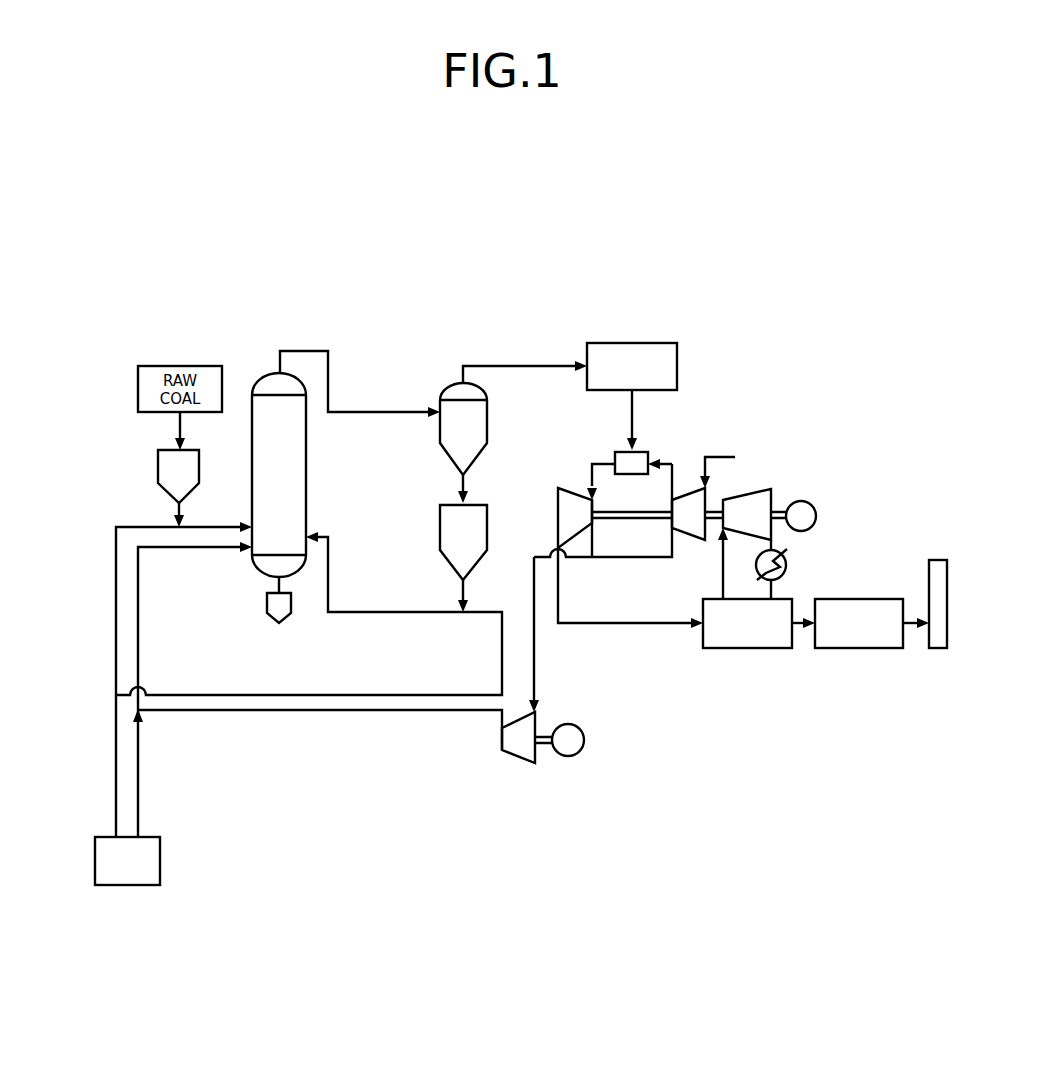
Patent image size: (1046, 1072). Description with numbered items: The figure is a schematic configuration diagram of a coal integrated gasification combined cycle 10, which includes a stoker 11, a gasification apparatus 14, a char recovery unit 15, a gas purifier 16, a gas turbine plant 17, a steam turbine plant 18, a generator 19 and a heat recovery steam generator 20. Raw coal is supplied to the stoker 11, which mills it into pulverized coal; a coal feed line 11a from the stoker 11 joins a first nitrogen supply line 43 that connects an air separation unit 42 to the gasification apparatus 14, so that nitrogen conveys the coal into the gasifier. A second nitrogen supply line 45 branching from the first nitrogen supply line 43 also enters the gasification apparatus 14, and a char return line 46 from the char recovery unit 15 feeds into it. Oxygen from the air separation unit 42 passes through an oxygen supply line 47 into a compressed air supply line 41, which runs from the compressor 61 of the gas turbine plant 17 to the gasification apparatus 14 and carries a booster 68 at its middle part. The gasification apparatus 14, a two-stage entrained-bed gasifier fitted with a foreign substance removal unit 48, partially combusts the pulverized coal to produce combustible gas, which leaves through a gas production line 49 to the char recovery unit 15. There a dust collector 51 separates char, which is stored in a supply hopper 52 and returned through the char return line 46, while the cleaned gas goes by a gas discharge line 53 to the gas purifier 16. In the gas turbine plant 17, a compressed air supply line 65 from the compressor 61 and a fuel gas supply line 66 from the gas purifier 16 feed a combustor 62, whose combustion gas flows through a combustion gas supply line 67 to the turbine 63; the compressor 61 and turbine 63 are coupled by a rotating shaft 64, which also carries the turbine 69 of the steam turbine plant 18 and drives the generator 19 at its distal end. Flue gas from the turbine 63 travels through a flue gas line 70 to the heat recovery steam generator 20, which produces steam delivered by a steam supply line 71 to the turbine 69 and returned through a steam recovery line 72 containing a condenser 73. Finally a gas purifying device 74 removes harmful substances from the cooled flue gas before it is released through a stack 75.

The coal integrated gasification combined cycle 10 is at (437, 200).
The stoker 11 is at (146, 468).
The coal feed line 11a is at (177, 505).
The gasification apparatus 14 is at (243, 376).
The char recovery unit 15 is at (456, 369).
The gas purifier 16 is at (651, 332).
The gas turbine plant 17 is at (617, 436).
The steam turbine plant 18 is at (738, 463).
The generator 19 is at (826, 499).
The heat recovery steam generator 20 is at (776, 660).
The compressed air supply line 41 is at (332, 712).
The air separation unit 42 is at (95, 850).
The first nitrogen supply line 43 is at (116, 744).
The second nitrogen supply line 45 is at (172, 693).
The char return line 46 is at (467, 588).
The oxygen supply line 47 is at (138, 744).
The foreign substance removal unit 48 is at (270, 617).
The gas production line 49 is at (302, 351).
The dust collector 51 is at (440, 430).
The supply hopper 52 is at (440, 533).
The gas discharge line 53 is at (519, 366).
The compressor 61 is at (697, 546).
The combustor 62 is at (648, 455).
The turbine 63 is at (557, 492).
The rotating shaft 64 is at (622, 519).
The compressed air supply line 65 is at (673, 476).
The fuel gas supply line 66 is at (640, 407).
The combustion gas supply line 67 is at (600, 461).
The booster 68 is at (513, 760).
The turbine 69 is at (765, 490).
The flue gas line 70 is at (628, 625).
The steam supply line 71 is at (720, 587).
The steam recovery line 72 is at (775, 587).
The condenser 73 is at (787, 558).
The gas purifying device 74 is at (872, 599).
The stack 75 is at (936, 560).